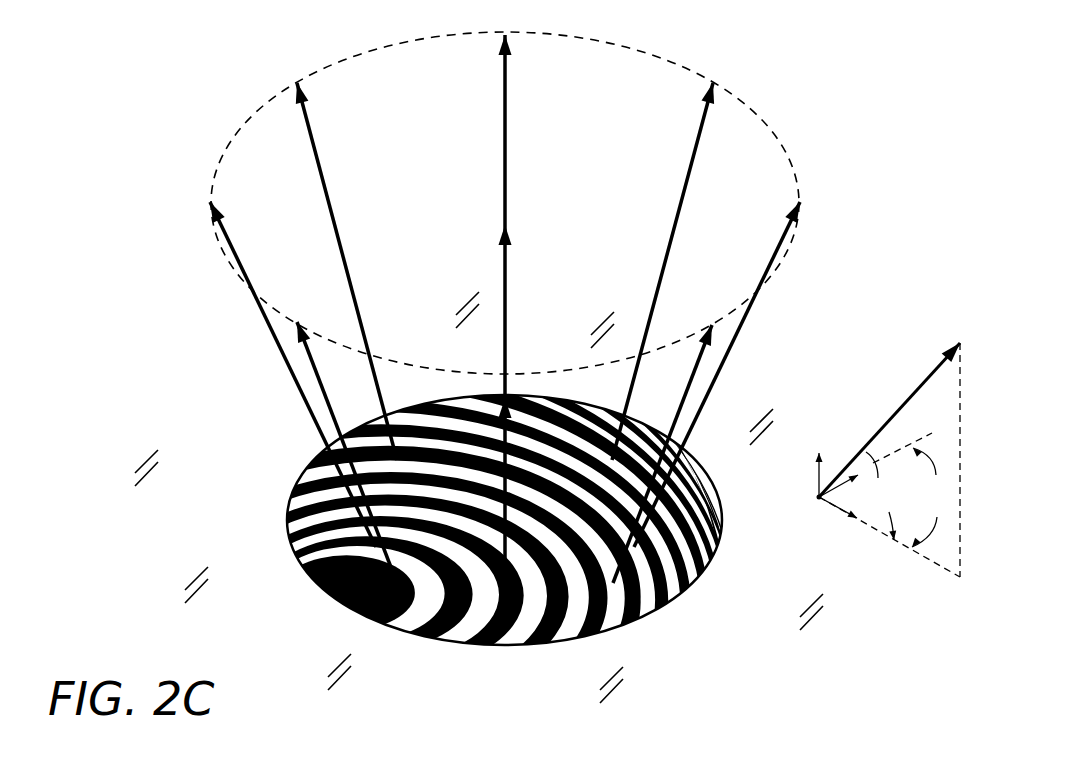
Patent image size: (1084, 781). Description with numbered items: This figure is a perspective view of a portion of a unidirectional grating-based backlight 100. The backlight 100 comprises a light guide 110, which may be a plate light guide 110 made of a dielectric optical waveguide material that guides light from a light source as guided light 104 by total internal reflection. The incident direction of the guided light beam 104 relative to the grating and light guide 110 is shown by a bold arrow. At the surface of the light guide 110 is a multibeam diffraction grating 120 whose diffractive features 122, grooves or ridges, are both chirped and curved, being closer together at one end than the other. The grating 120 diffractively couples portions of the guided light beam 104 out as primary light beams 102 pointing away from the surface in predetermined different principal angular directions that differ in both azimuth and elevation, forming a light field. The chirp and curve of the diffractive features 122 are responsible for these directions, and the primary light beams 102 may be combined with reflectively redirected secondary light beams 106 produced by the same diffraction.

The unidirectional grating-based backlight 100 is at (817, 170).
The primary light beams 102 is at (526, 310).
The reflectively redirected secondary light beams 106 is at (512, 93).
The guided light beam 104 is at (755, 375).
The light guide 110 is at (813, 582).
The multibeam diffraction grating 120 is at (288, 462).
The diffractive features 122 is at (652, 607).